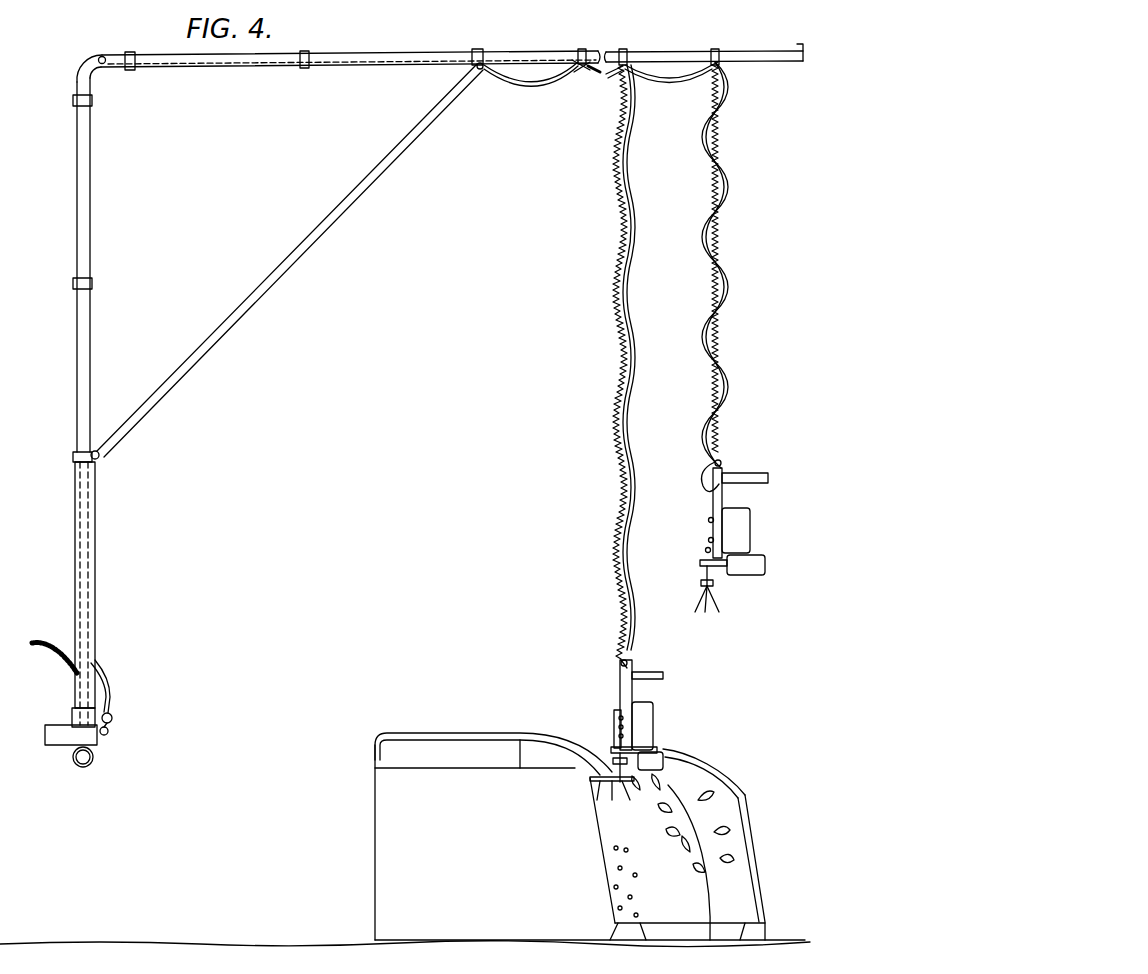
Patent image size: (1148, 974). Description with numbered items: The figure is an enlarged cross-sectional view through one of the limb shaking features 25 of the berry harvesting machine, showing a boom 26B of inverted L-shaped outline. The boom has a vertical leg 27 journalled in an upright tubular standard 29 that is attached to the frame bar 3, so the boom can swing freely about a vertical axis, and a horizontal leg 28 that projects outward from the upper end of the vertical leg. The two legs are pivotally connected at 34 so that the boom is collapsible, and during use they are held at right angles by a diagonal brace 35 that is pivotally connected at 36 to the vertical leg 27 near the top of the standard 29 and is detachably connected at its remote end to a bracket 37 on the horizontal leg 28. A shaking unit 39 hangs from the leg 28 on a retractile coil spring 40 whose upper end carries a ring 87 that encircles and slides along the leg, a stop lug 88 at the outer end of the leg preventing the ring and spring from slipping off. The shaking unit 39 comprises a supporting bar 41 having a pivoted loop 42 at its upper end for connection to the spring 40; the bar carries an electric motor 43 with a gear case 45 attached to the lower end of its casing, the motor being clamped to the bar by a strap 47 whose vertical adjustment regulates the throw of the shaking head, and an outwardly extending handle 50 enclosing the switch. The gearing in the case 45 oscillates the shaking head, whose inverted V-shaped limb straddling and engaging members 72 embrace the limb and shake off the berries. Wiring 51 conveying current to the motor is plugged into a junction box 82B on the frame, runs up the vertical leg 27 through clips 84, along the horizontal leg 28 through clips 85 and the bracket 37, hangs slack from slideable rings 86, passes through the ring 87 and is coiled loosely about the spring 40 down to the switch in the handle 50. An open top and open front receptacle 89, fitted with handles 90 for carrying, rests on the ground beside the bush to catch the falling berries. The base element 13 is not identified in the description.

The bar 3 is at (96, 757).
The base 13 is at (55, 745).
The limb shaking feature 25 is at (365, 53).
The boom 26B is at (94, 312).
The vertical leg 27 is at (82, 337).
The horizontal leg 28 is at (152, 66).
The upright tubular standard 29 is at (86, 552).
The pivotal connection 34 is at (103, 57).
The diagonal brace 35 is at (410, 128).
The pivotal connection 36 is at (98, 458).
The bracket 37 is at (478, 51).
The shaking unit 39 is at (750, 525).
The retractile coil spring 40 is at (714, 348).
The supporting bar 41 is at (713, 496).
The pivoted loop 42 is at (720, 463).
The motor 43 is at (735, 540).
The gear case 45 is at (765, 563).
The strap 47 is at (712, 529).
The handle 50 is at (752, 483).
The wiring 51 is at (537, 82).
The limb straddling and engaging member 72 is at (716, 600).
The junction box 82B is at (112, 727).
The clip 84 is at (76, 100).
The clip 85 is at (131, 53).
The ring 86 is at (581, 51).
The ring 87 is at (623, 51).
The stop lug 88 is at (800, 45).
The receptacle 89 is at (385, 803).
The handle 90 is at (503, 740).